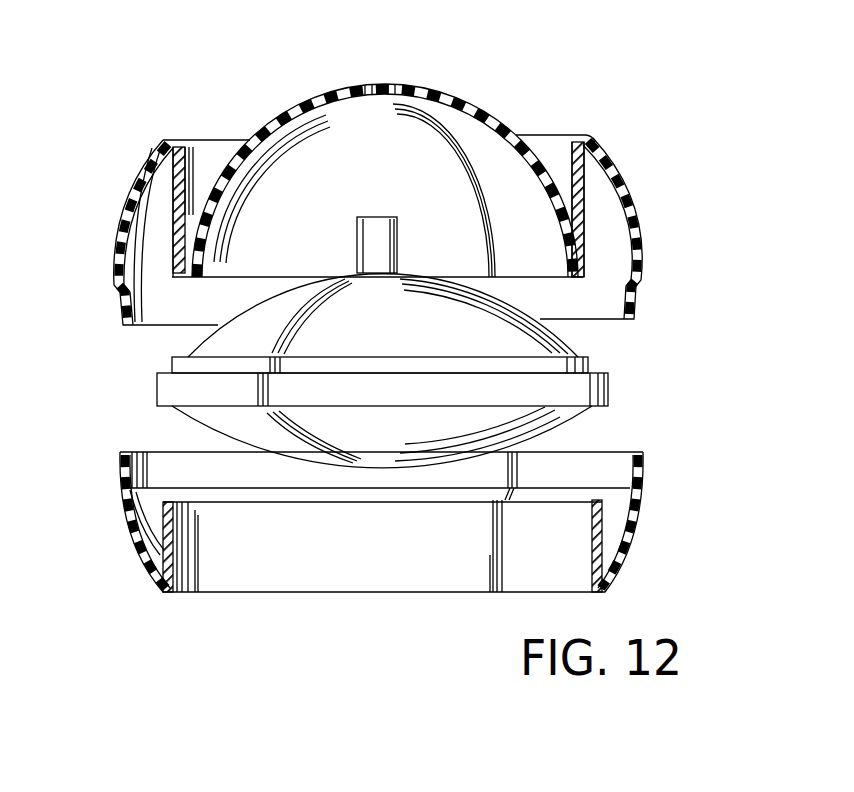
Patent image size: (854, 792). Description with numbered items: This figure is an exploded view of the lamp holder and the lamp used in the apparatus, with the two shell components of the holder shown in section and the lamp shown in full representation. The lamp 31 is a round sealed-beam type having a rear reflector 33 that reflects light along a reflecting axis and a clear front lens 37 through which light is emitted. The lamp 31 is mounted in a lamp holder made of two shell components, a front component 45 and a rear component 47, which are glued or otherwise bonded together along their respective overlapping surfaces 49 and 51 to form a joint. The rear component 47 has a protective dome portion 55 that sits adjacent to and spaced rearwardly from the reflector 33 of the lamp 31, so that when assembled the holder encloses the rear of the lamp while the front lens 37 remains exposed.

The lamp 31 is at (628, 355).
The rear reflector 33 is at (333, 297).
The clear front lens 37 is at (228, 426).
The front component 45 is at (632, 540).
The rear component 47 is at (637, 217).
The overlapping surface 49 is at (598, 462).
The overlapping surface 51 is at (122, 310).
The protective dome portion 55 is at (321, 100).